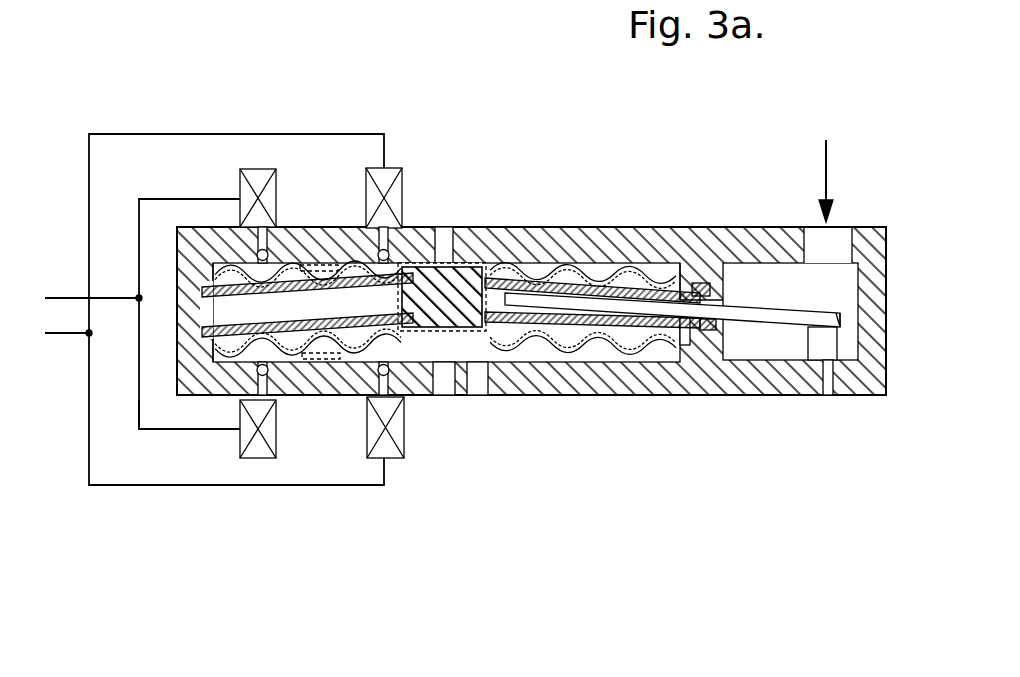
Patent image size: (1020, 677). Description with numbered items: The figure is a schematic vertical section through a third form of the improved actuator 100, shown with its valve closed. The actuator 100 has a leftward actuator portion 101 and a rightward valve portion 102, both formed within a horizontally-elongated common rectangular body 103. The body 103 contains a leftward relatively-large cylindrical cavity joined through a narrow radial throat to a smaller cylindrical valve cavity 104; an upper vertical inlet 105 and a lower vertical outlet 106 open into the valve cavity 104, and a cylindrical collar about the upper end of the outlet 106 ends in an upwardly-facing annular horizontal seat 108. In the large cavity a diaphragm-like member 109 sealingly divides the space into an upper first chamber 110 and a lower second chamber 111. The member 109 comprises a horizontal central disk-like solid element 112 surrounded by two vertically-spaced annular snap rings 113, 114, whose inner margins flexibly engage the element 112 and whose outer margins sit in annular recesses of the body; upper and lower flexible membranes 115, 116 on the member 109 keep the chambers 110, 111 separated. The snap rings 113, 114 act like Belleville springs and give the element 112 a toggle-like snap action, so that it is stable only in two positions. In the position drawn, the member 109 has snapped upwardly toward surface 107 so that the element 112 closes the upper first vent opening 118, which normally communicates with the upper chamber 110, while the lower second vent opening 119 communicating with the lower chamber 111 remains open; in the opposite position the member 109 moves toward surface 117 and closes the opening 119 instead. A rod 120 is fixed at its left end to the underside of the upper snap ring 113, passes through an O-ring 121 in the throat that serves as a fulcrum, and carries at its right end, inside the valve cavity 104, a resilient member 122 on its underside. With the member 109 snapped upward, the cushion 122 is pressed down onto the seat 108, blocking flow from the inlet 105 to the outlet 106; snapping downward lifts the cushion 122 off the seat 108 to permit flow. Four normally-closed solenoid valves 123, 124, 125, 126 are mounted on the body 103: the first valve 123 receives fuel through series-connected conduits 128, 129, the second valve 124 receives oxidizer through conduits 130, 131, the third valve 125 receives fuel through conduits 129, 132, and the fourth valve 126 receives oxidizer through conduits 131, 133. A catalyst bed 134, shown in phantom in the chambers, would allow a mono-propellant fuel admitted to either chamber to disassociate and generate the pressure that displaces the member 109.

The actuator 100 is at (419, 83).
The actuator portion 101 is at (515, 224).
The valve portion 102 is at (755, 224).
The body 103 is at (513, 397).
The valve cavity 104 is at (782, 354).
The inlet 105 is at (841, 231).
The outlet 106 is at (828, 397).
The surface 107 is at (507, 268).
The seat 108 is at (838, 348).
The diaphragm-like member 109 is at (486, 333).
The first chamber 110 is at (620, 270).
The second chamber 111 is at (637, 356).
The central element 112 is at (427, 317).
The upper snap ring 113 is at (572, 270).
The lower snap ring 114 is at (593, 330).
The upper flexible membrane 115 is at (297, 232).
The lower flexible membrane 116 is at (293, 337).
The surface 117 is at (466, 396).
The first vent opening 118 is at (442, 231).
The second vent opening 119 is at (443, 396).
The rod 120 is at (660, 290).
The O-ring 121 is at (723, 285).
The resilient member 122 is at (838, 330).
The first valve 123 is at (258, 169).
The second valve 124 is at (383, 167).
The third valve 125 is at (258, 456).
The fourth valve 126 is at (375, 456).
The conduit 128 is at (178, 199).
The conduit 129 is at (80, 298).
The conduit 130 is at (178, 134).
The conduit 131 is at (58, 334).
The conduit 132 is at (146, 414).
The conduit 133 is at (131, 487).
The catalyst bed 134 is at (326, 262).